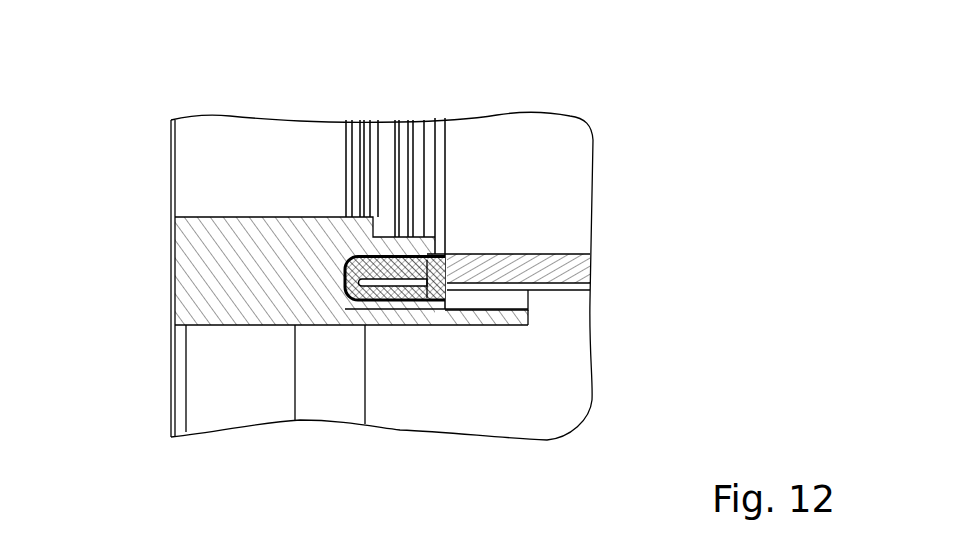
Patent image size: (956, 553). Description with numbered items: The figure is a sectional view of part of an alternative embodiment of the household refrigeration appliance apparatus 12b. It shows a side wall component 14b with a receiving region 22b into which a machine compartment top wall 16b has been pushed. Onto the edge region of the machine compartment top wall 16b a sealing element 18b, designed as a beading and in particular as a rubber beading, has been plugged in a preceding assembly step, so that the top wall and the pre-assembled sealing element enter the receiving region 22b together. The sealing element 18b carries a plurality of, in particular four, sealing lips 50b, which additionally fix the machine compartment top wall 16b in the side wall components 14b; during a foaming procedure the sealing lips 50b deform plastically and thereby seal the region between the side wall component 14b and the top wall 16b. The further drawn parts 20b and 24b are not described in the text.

The household refrigeration appliance apparatus 12b is at (276, 103).
The side wall component 14b is at (233, 253).
The machine compartment top wall 16b is at (535, 268).
The sealing element 18b is at (343, 282).
The wall 20b is at (360, 327).
The receiving region 22b is at (430, 312).
The flange 24b is at (478, 311).
The sealing lips 50b is at (402, 243).